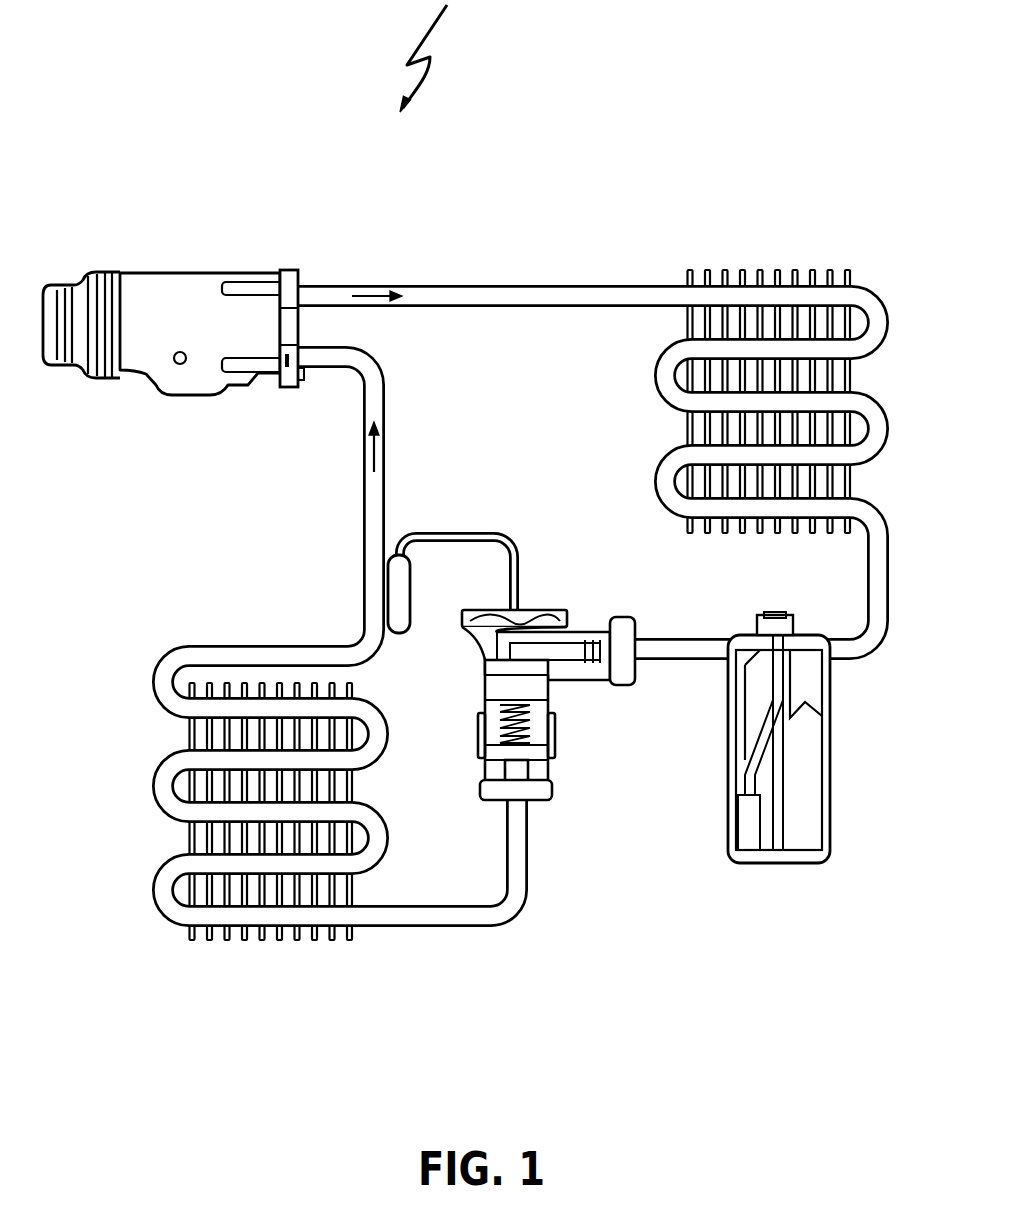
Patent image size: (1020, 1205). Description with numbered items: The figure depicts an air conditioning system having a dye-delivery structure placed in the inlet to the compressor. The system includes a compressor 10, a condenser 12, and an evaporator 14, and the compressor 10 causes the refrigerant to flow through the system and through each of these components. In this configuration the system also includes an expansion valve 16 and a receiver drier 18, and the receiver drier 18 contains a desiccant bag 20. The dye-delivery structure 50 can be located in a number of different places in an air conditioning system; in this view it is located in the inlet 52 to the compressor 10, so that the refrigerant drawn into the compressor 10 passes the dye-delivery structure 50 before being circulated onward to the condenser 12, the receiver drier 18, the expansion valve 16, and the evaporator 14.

The compressor 10 is at (183, 270).
The condenser 12 is at (743, 272).
The evaporator 14 is at (263, 937).
The expansion valve 16 is at (555, 740).
The receiver drier 18 is at (780, 863).
The desiccant bag 20 is at (805, 780).
The dye-delivery structure 50 is at (280, 378).
The inlet 52 is at (302, 372).